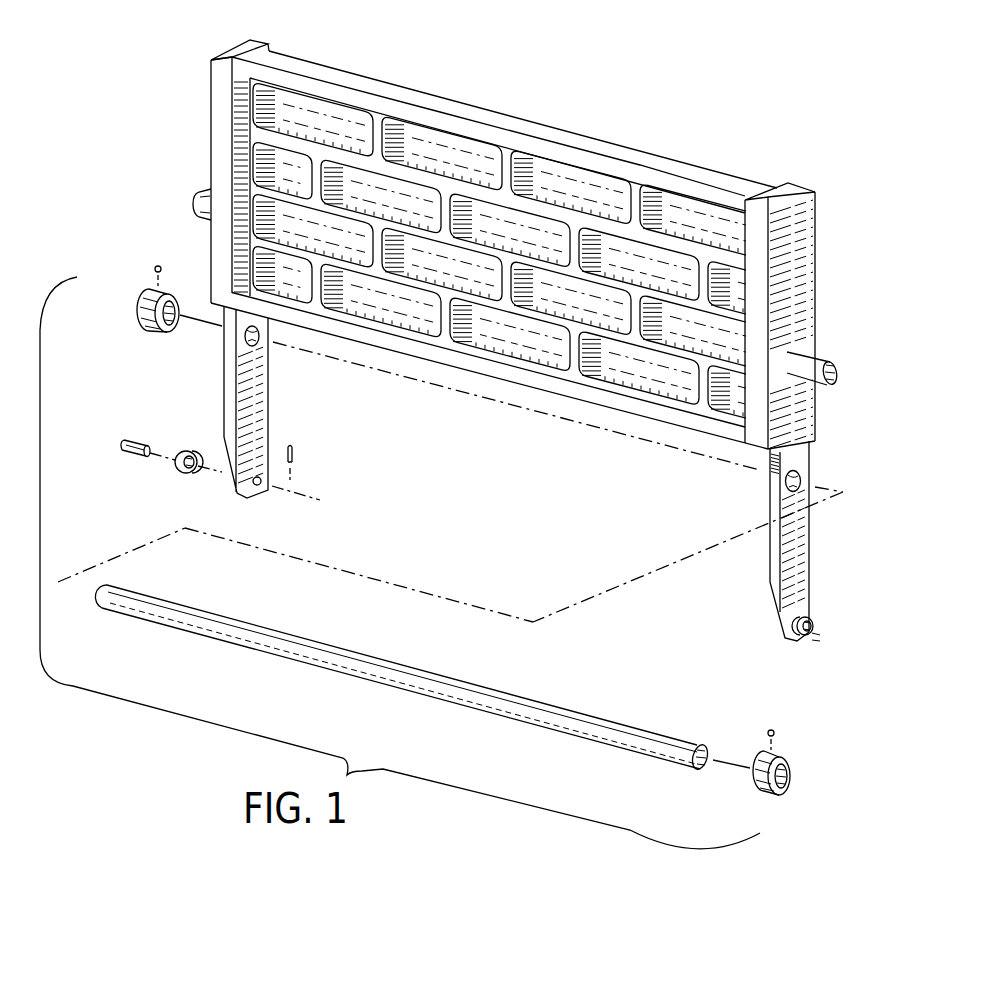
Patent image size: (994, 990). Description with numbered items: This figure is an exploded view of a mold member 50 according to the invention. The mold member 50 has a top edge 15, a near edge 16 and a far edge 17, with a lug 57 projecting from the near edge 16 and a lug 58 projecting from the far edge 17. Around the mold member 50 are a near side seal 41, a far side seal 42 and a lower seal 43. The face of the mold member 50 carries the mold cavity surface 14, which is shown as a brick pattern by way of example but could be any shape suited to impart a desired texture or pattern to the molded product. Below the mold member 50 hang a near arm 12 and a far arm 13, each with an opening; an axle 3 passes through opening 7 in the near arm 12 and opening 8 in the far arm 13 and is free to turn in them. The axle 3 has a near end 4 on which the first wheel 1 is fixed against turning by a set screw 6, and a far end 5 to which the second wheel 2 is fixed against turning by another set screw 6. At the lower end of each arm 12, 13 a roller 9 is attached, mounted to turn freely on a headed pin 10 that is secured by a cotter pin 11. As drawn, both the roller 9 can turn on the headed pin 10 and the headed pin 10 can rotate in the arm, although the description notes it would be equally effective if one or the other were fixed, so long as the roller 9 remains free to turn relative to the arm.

The first wheel 1 is at (788, 794).
The second wheel 2 is at (150, 330).
The axle 3 is at (402, 663).
The near end 4 is at (673, 733).
The far end 5 is at (130, 588).
The set screw 6 is at (157, 266).
The opening 7 is at (786, 476).
The opening 8 is at (261, 345).
The roller 9 is at (186, 473).
The headed pin 10 is at (132, 455).
The cotter pin 11 is at (297, 452).
The near arm 12 is at (733, 550).
The far arm 13 is at (224, 402).
The mold cavity surface 14 is at (432, 185).
The top edge 15 is at (500, 122).
The near edge 16 is at (813, 316).
The far edge 17 is at (197, 171).
The near side seal 41 is at (757, 262).
The far side seal 42 is at (221, 96).
The lower seal 43 is at (553, 388).
The mold member 50 is at (503, 240).
The lug 57 is at (838, 364).
The lug 58 is at (195, 197).